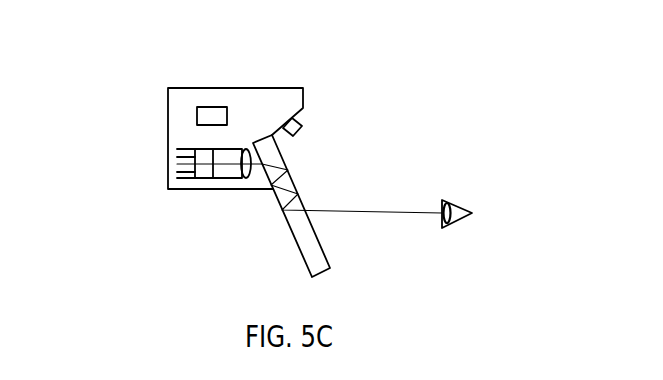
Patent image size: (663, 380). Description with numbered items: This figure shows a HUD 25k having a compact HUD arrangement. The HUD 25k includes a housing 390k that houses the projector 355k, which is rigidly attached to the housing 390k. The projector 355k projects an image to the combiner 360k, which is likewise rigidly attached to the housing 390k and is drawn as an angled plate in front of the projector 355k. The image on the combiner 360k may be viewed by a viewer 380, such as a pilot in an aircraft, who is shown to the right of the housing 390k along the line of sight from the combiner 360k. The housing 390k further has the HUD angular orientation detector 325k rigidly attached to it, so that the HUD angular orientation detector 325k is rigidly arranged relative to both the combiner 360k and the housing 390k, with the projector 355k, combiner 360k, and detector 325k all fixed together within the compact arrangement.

The HUD 25k is at (116, 41).
The HUD angular orientation detector 325k is at (207, 108).
The projector 355k is at (203, 172).
The combiner 360k is at (312, 252).
The viewer 380 is at (457, 205).
The housing 390k is at (253, 98).